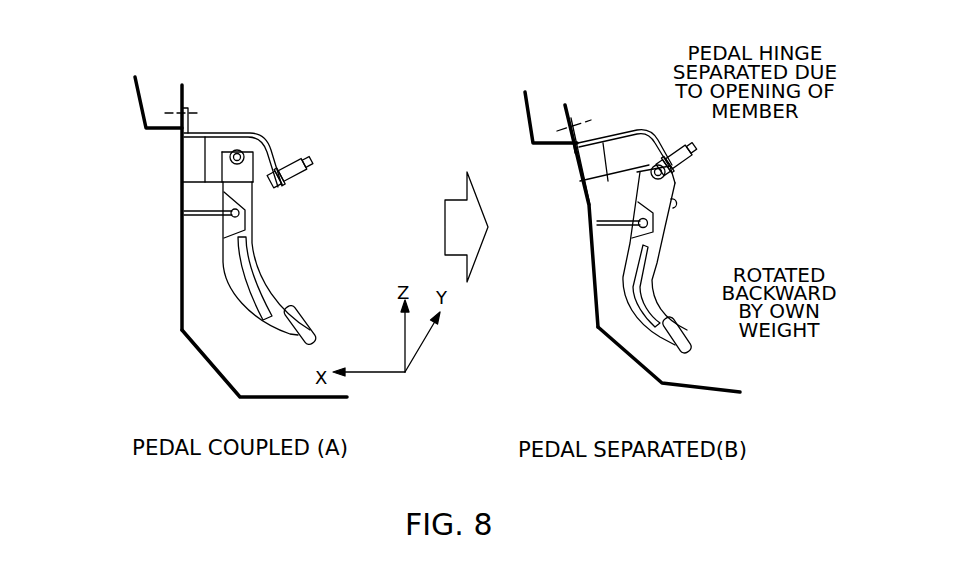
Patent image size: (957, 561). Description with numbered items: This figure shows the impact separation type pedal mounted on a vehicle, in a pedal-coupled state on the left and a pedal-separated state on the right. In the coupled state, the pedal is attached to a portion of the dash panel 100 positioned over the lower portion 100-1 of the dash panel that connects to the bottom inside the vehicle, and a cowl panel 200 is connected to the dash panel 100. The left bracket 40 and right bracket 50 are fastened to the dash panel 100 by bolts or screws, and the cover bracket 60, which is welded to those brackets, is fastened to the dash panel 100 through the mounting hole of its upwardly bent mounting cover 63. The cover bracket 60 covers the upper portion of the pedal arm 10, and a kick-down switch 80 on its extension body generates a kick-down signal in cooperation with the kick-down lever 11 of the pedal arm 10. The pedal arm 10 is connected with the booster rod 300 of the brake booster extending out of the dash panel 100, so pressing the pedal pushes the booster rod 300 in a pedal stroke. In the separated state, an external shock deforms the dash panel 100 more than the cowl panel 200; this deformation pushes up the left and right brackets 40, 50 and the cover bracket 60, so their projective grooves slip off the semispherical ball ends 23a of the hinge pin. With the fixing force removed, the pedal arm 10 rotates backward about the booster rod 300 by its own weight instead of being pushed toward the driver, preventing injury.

The pedal arm 10 is at (247, 265).
The kick-down lever 11 is at (676, 204).
The semispherical ball ends 23a is at (246, 156).
The left bracket 40 is at (193, 161).
The right bracket 50 is at (217, 172).
The cover bracket 60 is at (262, 135).
The mounting cover 63 is at (184, 110).
The kick-down switch 80 is at (697, 150).
The dash panel 100 is at (182, 85).
The lower portion of the dash panel 100-1 is at (182, 268).
The cowl panel 200 is at (135, 100).
The booster rod 300 is at (197, 214).